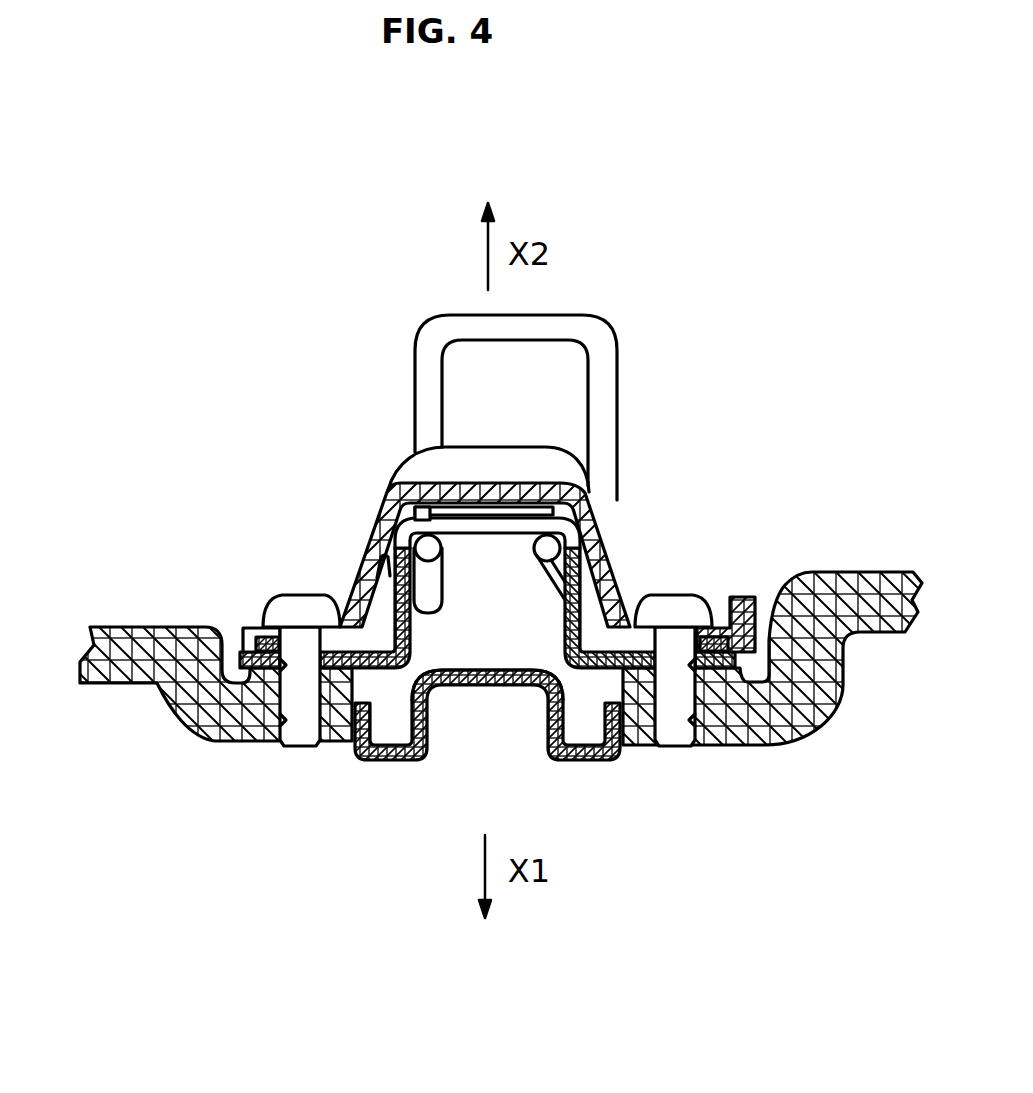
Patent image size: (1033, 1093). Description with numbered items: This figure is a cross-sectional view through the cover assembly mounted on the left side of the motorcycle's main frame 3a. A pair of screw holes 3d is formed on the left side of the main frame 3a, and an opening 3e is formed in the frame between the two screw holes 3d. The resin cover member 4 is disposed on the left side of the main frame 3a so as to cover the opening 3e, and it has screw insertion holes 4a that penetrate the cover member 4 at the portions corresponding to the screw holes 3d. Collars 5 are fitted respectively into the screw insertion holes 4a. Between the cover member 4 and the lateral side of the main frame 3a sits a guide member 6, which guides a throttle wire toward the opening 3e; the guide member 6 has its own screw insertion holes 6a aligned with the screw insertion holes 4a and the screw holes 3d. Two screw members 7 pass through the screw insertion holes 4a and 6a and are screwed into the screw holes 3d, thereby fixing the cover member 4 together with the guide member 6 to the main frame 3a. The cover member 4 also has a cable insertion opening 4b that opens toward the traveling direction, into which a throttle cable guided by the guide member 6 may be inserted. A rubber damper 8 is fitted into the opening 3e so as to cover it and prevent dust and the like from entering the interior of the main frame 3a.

The main frame 3a is at (852, 585).
The screw holes 3d is at (266, 740).
The opening 3e is at (606, 752).
The cover member 4 is at (412, 470).
The screw insertion holes 4a is at (252, 647).
The cable insertion opening 4b is at (385, 568).
The collars 5 is at (245, 643).
The guide member 6 is at (584, 584).
The screw insertion holes 6a is at (278, 670).
The screw members 7 is at (301, 605).
The rubber damper 8 is at (466, 688).